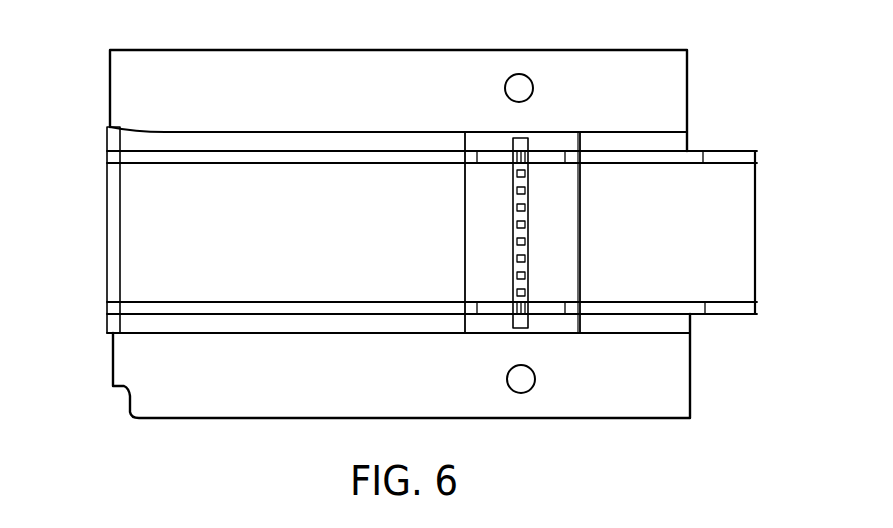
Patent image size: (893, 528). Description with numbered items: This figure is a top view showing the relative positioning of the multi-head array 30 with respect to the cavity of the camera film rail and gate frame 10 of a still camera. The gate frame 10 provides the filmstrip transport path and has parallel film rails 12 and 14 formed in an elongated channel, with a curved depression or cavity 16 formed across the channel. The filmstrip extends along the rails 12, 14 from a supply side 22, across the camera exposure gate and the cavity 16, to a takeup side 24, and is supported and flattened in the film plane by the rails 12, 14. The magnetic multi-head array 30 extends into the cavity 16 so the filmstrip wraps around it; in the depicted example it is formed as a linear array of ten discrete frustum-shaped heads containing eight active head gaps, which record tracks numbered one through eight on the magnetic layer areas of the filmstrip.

The camera film rail and gate frame 10 is at (126, 92).
The film rail 12 is at (328, 153).
The film rail 14 is at (175, 308).
The cavity 16 is at (562, 211).
The supply side 22 is at (150, 248).
The takeup side 24 is at (722, 261).
The multi-head array 30 is at (532, 245).